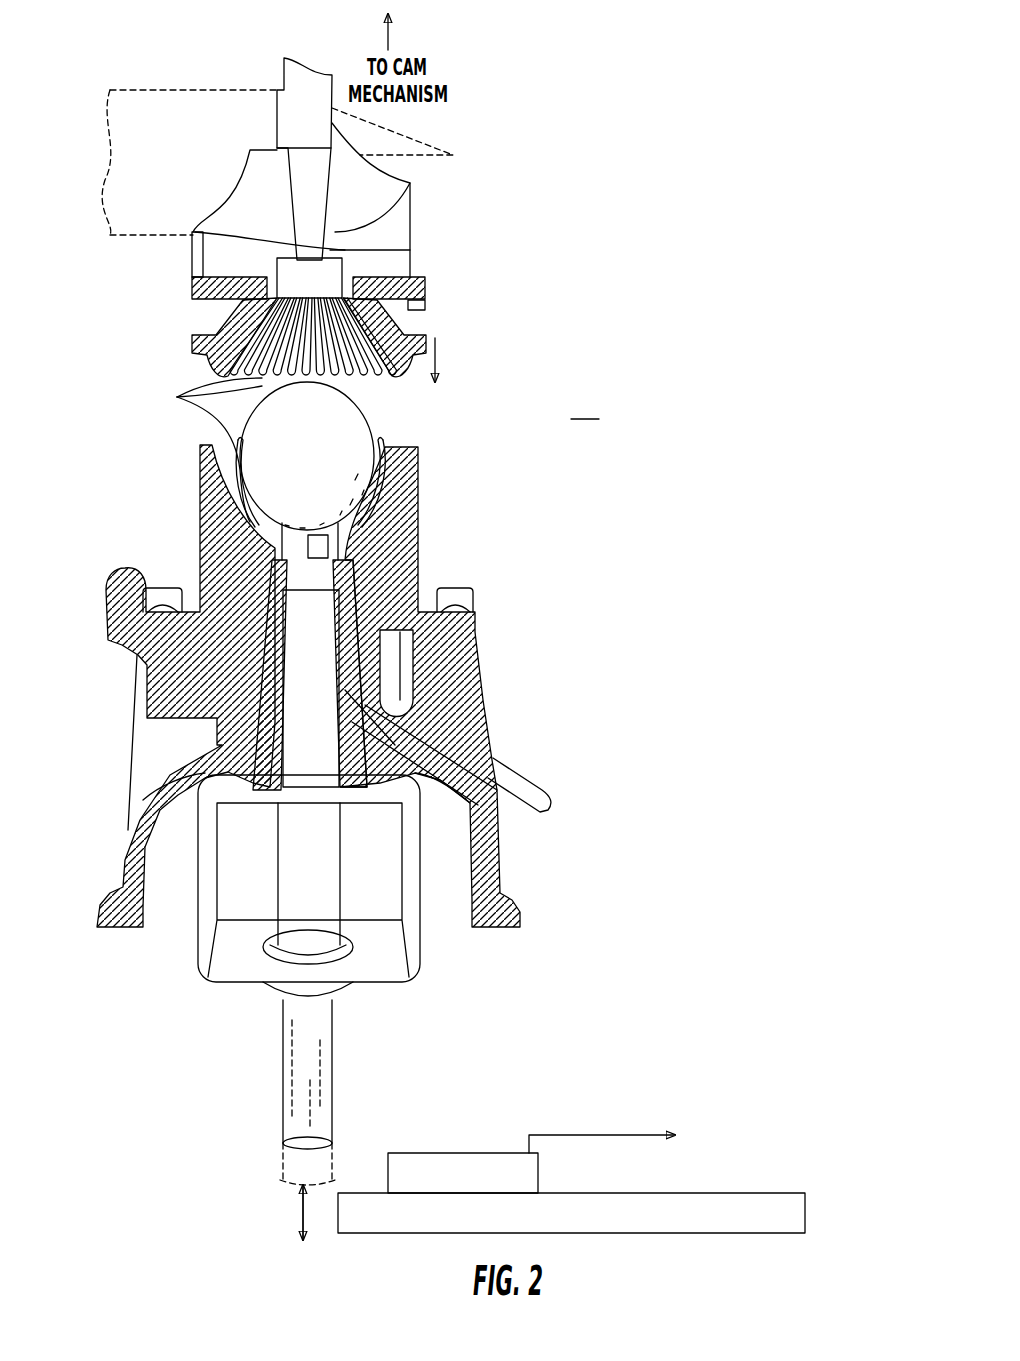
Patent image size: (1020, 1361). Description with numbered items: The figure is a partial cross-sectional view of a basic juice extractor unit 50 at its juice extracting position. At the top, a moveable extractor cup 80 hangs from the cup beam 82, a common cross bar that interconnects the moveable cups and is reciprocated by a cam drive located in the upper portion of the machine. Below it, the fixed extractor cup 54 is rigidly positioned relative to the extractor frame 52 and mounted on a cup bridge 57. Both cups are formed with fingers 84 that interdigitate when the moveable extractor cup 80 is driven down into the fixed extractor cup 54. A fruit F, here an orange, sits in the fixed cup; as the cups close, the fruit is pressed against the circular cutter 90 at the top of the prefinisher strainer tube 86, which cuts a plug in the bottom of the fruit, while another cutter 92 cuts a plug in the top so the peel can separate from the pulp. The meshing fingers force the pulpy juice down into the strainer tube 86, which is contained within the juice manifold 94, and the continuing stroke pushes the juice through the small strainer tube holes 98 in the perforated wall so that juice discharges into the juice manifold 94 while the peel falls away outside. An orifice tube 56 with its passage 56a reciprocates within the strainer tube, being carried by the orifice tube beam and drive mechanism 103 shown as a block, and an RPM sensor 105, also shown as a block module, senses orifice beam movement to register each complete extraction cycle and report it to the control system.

The juice extractor unit 50 is at (585, 405).
The extractor frame 52 is at (108, 238).
The fixed extractor cup 54 is at (420, 532).
The orifice tube 56 is at (335, 1075).
The orifice tube bore 56a is at (308, 1020).
The cup bridge 57 is at (497, 705).
The moveable extractor cup 80 is at (400, 328).
The cup beam 82 is at (192, 233).
The fingers 84 is at (177, 397).
The prefinisher strainer tube 86 is at (345, 683).
The circular cutter 90 is at (298, 548).
The cutter 92 is at (322, 272).
The juice manifold 94 is at (420, 872).
The strainer tube holes 98 is at (296, 712).
The orifice tube beam and drive mechanism 103 is at (556, 1193).
The RPM sensor 105 is at (452, 1153).
The fruit F is at (360, 425).